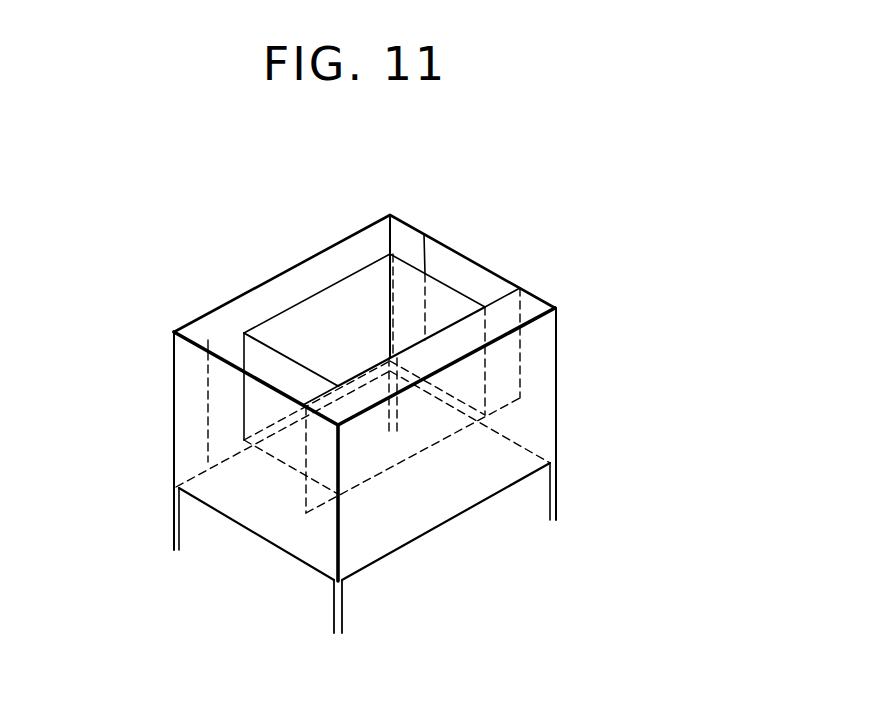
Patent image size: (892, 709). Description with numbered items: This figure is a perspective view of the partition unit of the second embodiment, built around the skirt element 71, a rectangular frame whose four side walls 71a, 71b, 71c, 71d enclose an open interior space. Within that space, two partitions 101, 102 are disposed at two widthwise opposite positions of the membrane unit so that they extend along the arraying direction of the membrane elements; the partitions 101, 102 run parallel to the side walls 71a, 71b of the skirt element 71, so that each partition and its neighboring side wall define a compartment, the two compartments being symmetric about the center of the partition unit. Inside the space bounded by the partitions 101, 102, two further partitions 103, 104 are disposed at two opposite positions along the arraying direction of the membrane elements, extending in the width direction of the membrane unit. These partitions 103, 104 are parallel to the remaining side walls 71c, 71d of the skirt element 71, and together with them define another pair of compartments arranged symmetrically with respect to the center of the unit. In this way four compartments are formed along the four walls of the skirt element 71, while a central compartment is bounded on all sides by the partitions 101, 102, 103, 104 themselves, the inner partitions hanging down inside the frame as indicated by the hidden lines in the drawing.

The skirt element 71 is at (382, 409).
The side wall 71a is at (261, 283).
The side wall 71b is at (458, 498).
The side wall 71c is at (258, 526).
The side wall 71d is at (546, 300).
The partition 101 is at (343, 278).
The partition 102 is at (447, 331).
The partition 103 is at (283, 355).
The partition 104 is at (448, 287).